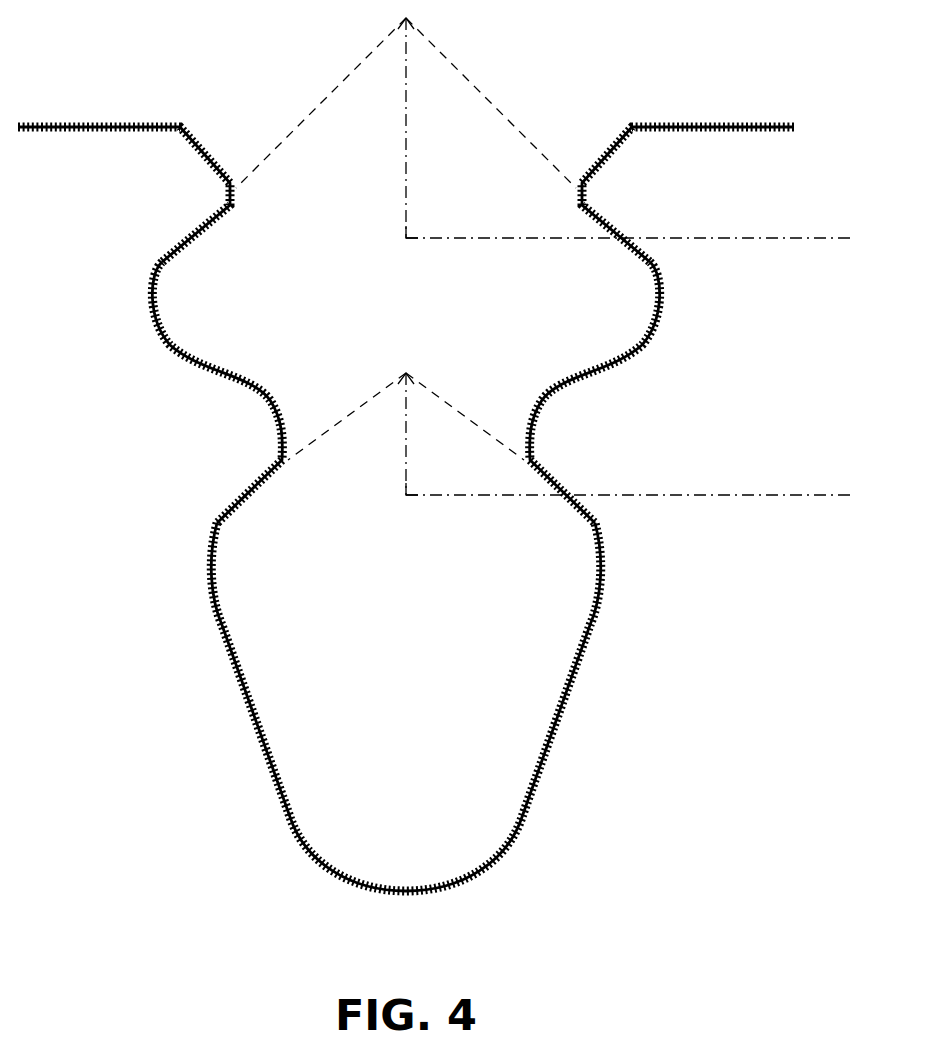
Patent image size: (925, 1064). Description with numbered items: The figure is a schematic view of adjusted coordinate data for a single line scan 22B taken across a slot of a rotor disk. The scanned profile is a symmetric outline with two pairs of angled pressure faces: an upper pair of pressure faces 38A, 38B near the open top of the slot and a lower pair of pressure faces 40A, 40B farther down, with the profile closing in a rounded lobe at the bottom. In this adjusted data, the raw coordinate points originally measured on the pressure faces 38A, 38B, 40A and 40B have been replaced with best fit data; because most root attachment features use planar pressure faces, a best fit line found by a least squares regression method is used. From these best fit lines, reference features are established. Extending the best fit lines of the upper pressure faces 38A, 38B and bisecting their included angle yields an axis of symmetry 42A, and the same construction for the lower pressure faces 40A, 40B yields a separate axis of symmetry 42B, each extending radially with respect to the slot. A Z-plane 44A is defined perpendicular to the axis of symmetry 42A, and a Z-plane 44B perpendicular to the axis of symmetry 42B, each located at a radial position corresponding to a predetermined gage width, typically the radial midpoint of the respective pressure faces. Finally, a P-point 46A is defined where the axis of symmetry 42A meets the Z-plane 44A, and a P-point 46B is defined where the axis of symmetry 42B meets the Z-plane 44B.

The line scan 22B is at (196, 850).
The upper pressure face 38A is at (212, 198).
The upper pressure face 38B is at (655, 254).
The lower pressure face 40A is at (267, 459).
The lower pressure face 40B is at (611, 518).
The axis of symmetry 42A is at (404, 177).
The axis of symmetry 42B is at (407, 440).
The Z-plane 44A is at (818, 240).
The Z-plane 44B is at (813, 496).
The P-point 46A is at (404, 240).
The P-point 46B is at (404, 497).